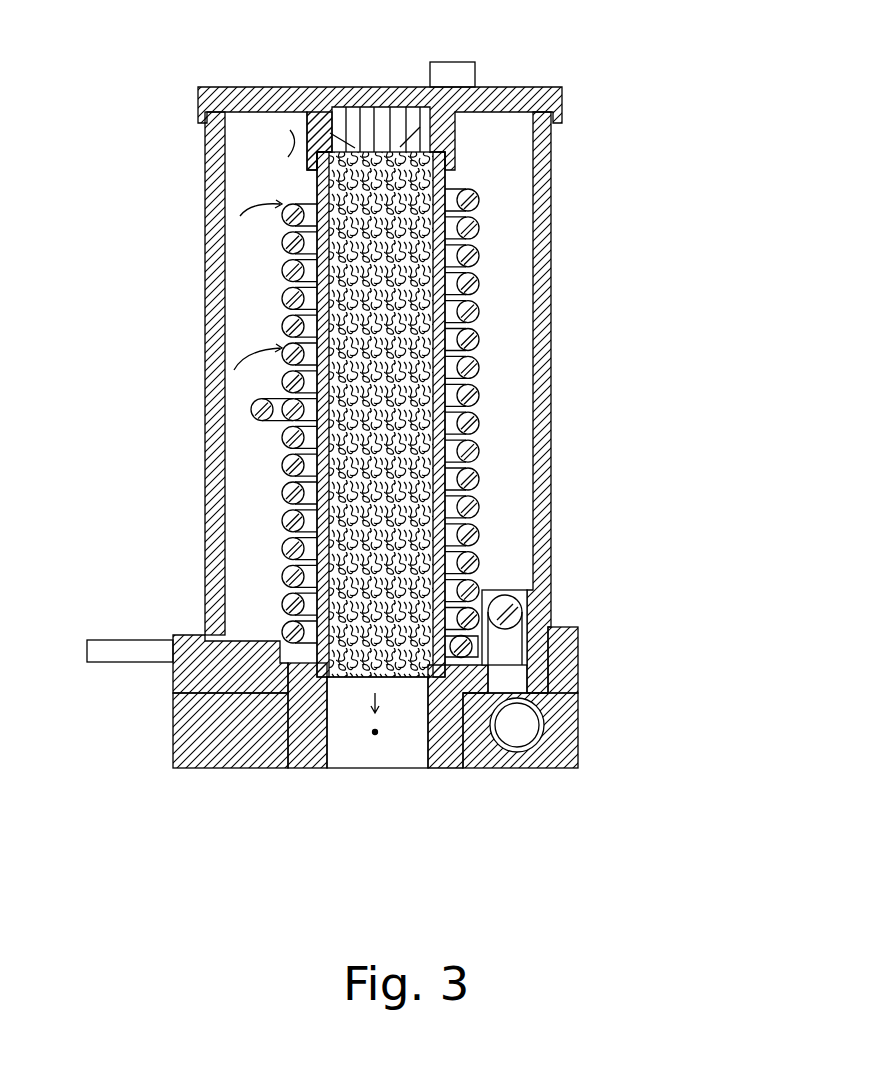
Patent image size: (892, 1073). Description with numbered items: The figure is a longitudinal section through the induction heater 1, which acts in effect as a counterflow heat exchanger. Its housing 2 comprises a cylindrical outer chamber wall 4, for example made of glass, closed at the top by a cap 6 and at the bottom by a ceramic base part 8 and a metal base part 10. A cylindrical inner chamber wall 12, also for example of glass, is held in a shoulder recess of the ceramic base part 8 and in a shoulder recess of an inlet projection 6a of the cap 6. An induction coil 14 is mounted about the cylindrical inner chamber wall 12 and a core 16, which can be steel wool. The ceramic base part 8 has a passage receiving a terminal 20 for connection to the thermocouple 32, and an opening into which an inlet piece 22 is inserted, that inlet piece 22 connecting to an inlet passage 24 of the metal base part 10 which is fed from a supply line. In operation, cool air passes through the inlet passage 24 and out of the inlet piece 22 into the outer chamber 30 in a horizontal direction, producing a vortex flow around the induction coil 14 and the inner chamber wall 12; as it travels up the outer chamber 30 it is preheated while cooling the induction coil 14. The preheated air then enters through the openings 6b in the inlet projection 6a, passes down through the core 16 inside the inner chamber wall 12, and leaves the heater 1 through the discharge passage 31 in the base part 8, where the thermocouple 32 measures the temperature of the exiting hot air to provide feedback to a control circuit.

The induction heater 1 is at (624, 132).
The housing 2 is at (555, 293).
The cylindrical outer chamber wall 4 is at (205, 355).
The cap 6 is at (344, 86).
The inlet projection 6a is at (318, 120).
The openings 6b is at (403, 135).
The ceramic base part 8 is at (180, 673).
The metal base part 10 is at (225, 768).
The cylindrical inner chamber wall 12 is at (312, 187).
The induction coil 14 is at (276, 272).
The core 16 is at (339, 683).
The terminal 20 is at (133, 638).
The inlet piece 22 is at (548, 612).
The inlet passage 24 is at (520, 724).
The outer chamber 30 is at (486, 256).
The discharge passage 31 is at (405, 740).
The thermocouple 32 is at (374, 742).